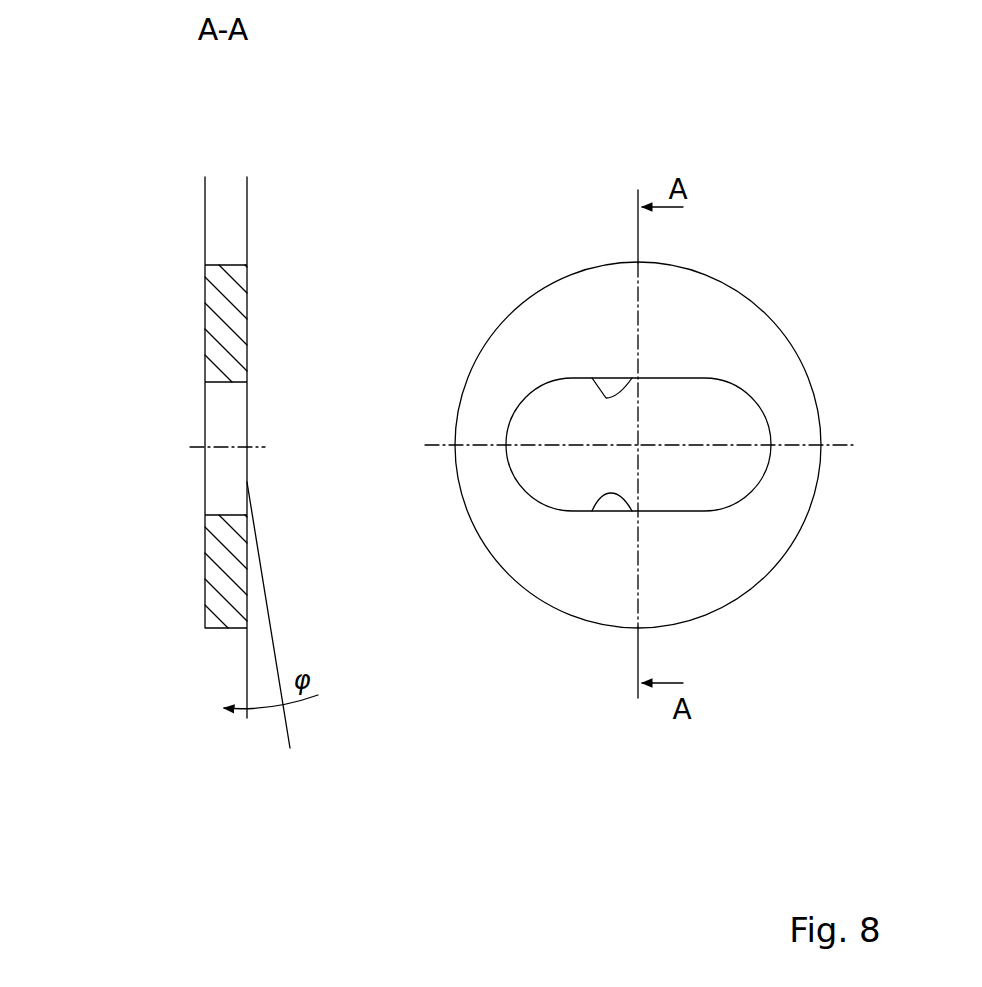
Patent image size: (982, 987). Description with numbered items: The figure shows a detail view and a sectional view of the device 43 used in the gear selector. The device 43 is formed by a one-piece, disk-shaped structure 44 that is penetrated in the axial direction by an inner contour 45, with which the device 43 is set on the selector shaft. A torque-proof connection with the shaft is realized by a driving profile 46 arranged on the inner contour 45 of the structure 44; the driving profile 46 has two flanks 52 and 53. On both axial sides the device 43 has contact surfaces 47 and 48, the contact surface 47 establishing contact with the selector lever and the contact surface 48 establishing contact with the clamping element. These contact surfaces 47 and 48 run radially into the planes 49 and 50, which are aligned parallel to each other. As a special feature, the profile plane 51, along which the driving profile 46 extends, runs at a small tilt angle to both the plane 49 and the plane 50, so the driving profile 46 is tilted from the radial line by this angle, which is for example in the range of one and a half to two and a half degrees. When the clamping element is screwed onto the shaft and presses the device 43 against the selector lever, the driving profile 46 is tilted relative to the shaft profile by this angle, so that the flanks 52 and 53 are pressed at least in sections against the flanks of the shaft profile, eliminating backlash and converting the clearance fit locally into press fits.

The device 43 is at (208, 639).
The disk-shaped structure 44 is at (435, 349).
The inner contour 45 is at (402, 295).
The driving profile 46 is at (401, 468).
The contact surface 47 is at (159, 201).
The contact surface 48 is at (292, 201).
The plane 49 is at (190, 146).
The plane 50 is at (257, 145).
The profile plane 51 is at (295, 674).
The flank 52 is at (588, 234).
The flank 53 is at (618, 680).